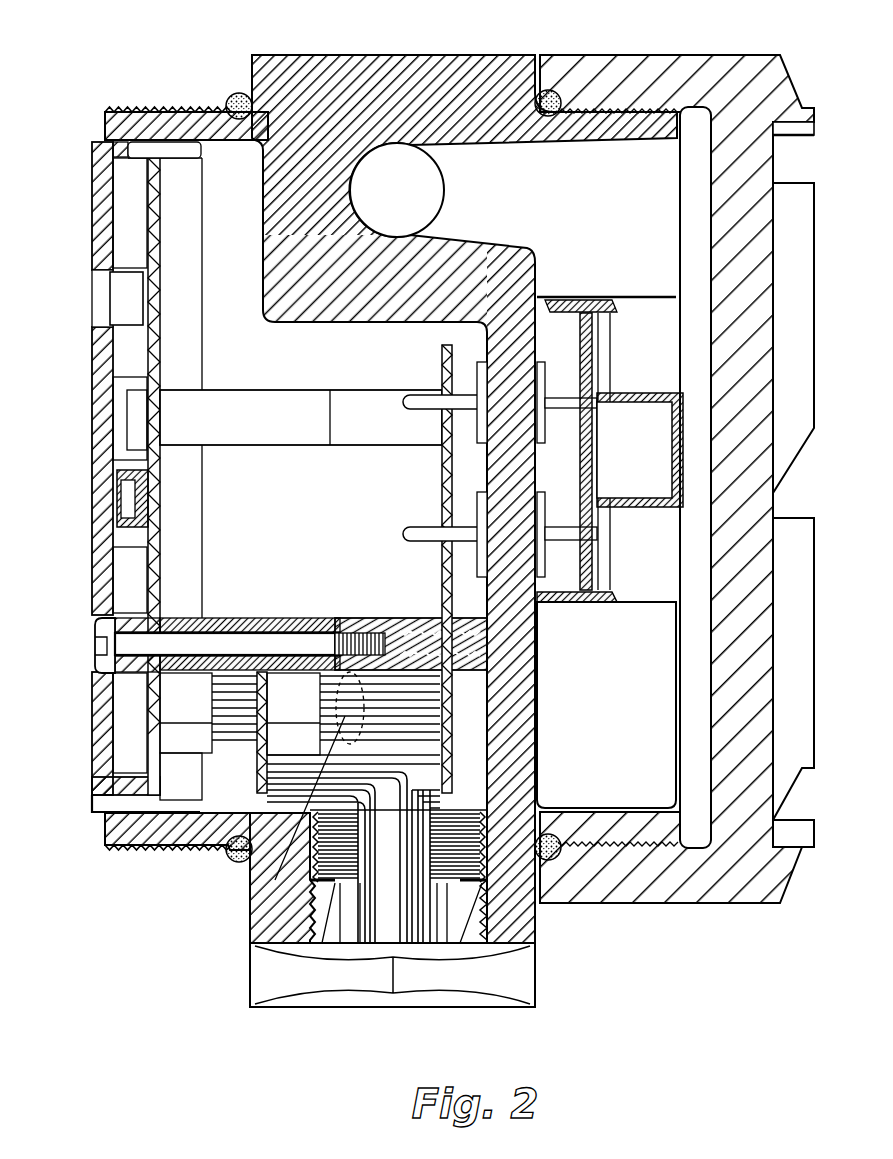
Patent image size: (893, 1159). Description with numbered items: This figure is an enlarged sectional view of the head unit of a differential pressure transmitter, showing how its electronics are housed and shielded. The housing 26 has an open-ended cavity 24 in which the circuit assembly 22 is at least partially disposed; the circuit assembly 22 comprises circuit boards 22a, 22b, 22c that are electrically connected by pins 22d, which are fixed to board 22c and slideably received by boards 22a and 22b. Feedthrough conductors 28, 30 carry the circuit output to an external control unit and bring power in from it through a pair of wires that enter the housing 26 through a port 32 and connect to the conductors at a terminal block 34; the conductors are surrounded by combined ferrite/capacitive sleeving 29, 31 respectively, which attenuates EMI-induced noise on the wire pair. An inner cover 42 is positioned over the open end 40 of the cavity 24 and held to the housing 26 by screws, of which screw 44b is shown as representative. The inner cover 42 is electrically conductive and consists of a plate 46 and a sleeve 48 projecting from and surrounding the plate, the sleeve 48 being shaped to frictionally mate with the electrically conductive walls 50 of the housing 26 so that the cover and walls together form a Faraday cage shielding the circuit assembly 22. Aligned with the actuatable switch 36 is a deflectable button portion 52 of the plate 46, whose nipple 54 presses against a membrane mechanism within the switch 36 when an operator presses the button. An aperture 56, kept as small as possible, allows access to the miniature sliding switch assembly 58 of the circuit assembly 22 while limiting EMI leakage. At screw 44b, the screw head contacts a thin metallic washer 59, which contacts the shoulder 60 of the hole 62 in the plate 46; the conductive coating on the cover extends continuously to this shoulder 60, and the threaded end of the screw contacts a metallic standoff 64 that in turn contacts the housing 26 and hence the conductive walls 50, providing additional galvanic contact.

The circuit assembly 22 is at (122, 182).
The circuit board 22a is at (187, 810).
The circuit board 22b is at (257, 777).
The circuit board 22c is at (440, 362).
The pins 22d is at (250, 903).
The open-ended cavity 24 is at (263, 145).
The housing 26 is at (372, 55).
The feedthrough conductor 28 is at (585, 298).
The ferrite/capacitive sleeving 29 is at (545, 388).
The feedthrough conductor 30 is at (566, 604).
The ferrite/capacitive sleeving 31 is at (547, 596).
The port 32 is at (392, 148).
The terminal block 34 is at (636, 600).
The actuatable switch 36 is at (144, 537).
The open end 40 is at (68, 403).
The inner cover 42 is at (95, 730).
The screw 44b is at (97, 660).
The plate 46 is at (98, 224).
The sleeve 48 is at (176, 156).
The electrically conductive walls 50 is at (214, 143).
The deflectable button portion 52 is at (97, 530).
The nipple 54 is at (118, 492).
The aperture 56 is at (78, 300).
The miniature sliding switch assembly 58 is at (140, 305).
The thin metallic washer 59 is at (117, 662).
The shoulder 60 is at (125, 612).
The hole 62 is at (82, 626).
The metallic standoff 64 is at (392, 620).